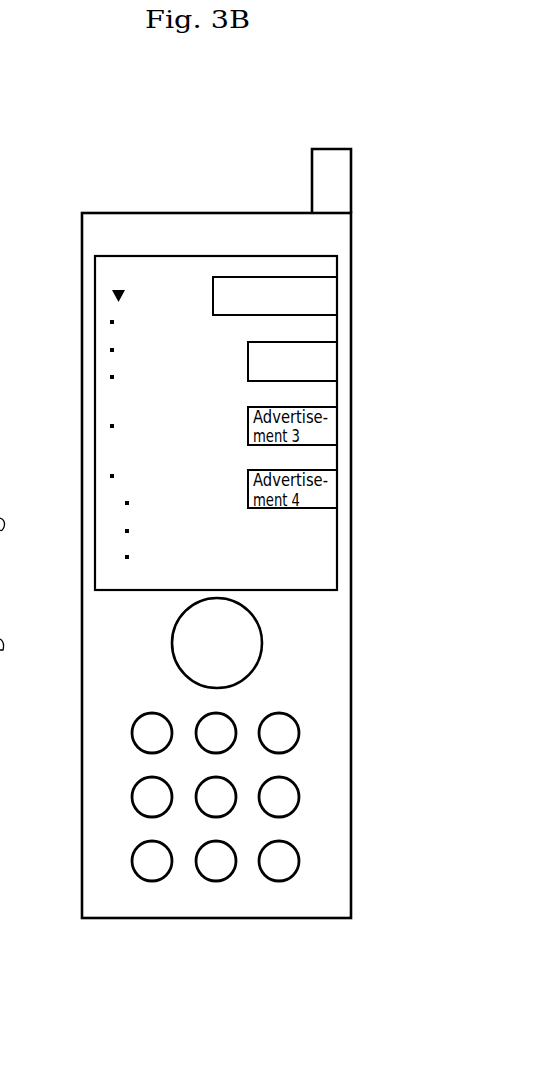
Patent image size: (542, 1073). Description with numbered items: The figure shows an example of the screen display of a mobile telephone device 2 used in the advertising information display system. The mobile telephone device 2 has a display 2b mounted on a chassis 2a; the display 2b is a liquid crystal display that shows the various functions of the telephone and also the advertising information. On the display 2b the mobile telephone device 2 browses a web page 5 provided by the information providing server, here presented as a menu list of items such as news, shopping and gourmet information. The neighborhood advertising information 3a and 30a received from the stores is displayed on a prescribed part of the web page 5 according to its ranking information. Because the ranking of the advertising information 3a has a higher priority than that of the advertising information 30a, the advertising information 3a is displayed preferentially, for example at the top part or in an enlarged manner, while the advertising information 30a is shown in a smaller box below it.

The mobile telephone device 2 is at (176, 178).
The chassis 2a is at (318, 680).
The display 2b is at (317, 560).
The web page 5 is at (110, 273).
The advertising information 3a is at (320, 293).
The advertising information 30a is at (318, 372).